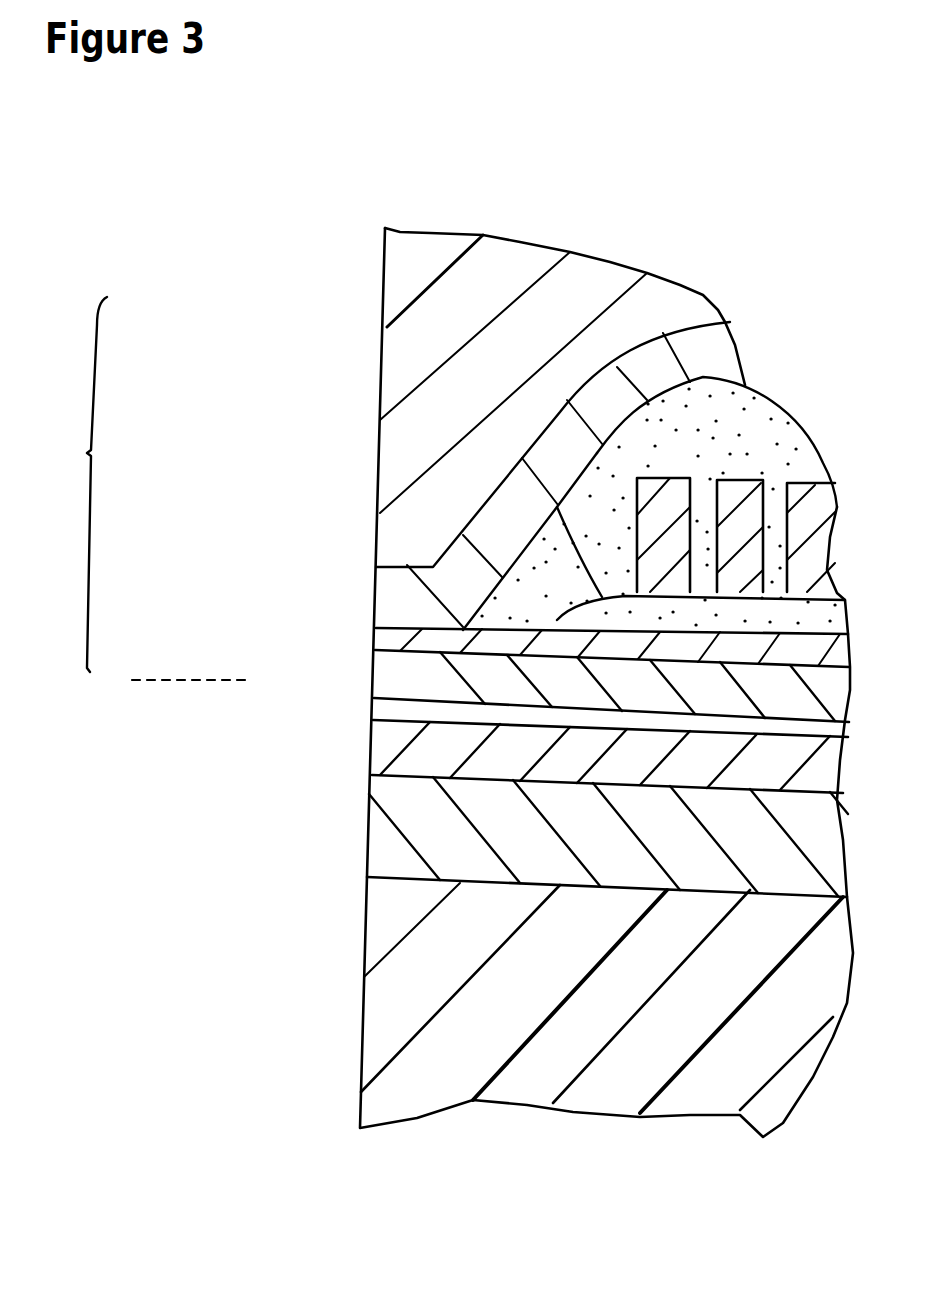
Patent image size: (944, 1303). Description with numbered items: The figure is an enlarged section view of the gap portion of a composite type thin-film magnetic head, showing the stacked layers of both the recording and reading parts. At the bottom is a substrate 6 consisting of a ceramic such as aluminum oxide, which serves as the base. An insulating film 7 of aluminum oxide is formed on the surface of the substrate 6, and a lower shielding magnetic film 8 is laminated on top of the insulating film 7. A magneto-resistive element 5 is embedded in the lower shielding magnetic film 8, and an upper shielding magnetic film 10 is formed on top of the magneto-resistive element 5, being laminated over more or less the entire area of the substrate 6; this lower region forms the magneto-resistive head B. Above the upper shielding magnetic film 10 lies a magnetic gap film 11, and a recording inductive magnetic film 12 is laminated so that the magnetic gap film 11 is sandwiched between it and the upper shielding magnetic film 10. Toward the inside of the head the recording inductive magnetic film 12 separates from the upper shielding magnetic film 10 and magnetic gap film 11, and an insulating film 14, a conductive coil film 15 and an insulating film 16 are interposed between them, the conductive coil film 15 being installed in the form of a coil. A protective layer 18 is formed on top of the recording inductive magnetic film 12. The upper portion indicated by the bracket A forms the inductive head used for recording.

The protective layer 18 is at (408, 272).
The insulating film 14 is at (533, 450).
The recording inductive magnetic film 12 is at (390, 583).
The insulating film 16 is at (738, 420).
The conductive coil film 15 is at (813, 507).
The magnetic gap film 11 is at (387, 627).
The upper shielding magnetic film 10 is at (390, 670).
The magneto-resistive element 5 is at (403, 712).
The lower shielding magnetic film 8 is at (390, 753).
The insulating film 7 is at (377, 817).
The substrate 6 is at (400, 998).
The inductive head portion A is at (78, 484).
The magneto-resistive head B is at (174, 676).